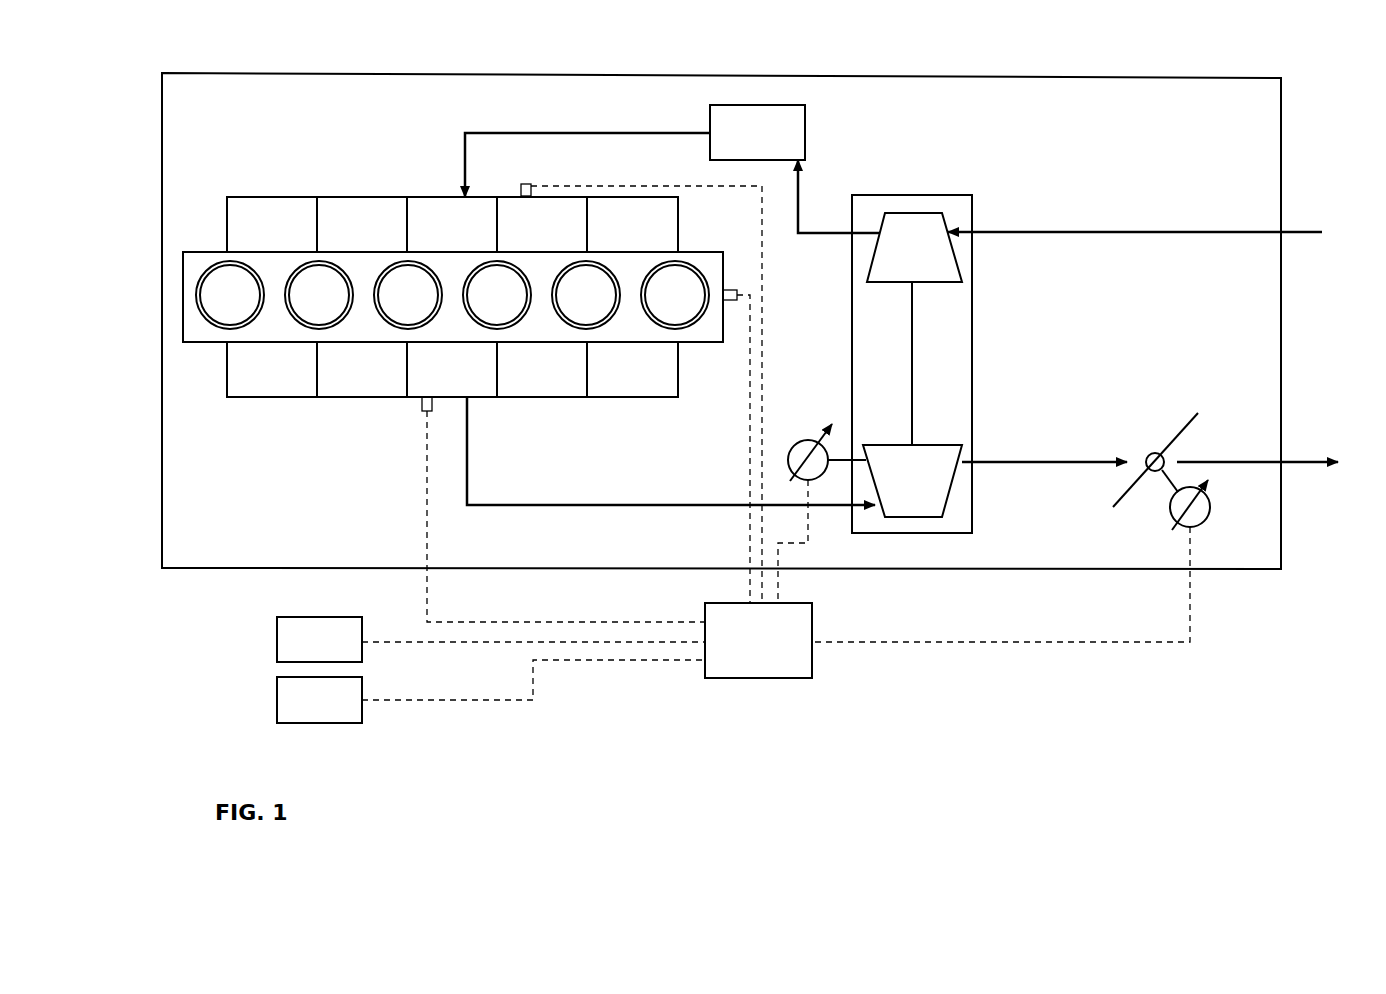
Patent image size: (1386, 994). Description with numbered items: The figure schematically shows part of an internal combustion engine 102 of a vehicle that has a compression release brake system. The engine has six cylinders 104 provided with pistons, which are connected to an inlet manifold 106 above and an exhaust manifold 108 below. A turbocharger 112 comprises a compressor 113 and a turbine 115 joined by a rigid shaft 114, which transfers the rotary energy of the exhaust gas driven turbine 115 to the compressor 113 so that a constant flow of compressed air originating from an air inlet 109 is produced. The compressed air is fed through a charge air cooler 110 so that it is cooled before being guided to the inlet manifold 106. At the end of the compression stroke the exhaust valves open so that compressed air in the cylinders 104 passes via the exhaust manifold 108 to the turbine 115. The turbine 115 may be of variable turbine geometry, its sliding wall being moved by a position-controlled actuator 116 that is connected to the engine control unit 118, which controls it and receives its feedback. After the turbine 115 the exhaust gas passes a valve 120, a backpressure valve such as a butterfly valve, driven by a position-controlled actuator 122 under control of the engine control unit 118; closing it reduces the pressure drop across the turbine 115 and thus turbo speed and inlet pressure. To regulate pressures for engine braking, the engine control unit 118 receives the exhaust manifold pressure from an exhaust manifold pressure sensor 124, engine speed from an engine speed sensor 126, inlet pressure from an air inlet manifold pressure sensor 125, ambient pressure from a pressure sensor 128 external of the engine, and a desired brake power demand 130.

The internal combustion engine 102 is at (721, 321).
The cylinders 104 is at (205, 293).
The inlet manifold 106 is at (308, 197).
The exhaust manifold 108 is at (300, 398).
The air inlet 109 is at (1135, 212).
The charge air cooler 110 is at (672, 169).
The turbocharger 112 is at (973, 363).
The compressor 113 is at (928, 227).
The rigid shaft 114 is at (912, 380).
The turbine 115 is at (935, 490).
The actuator 116 is at (822, 501).
The engine control unit 118 is at (758, 640).
The valve 120 is at (1225, 460).
The position-controlled actuator 122 is at (1036, 556).
The exhaust manifold pressure sensor 124 is at (543, 509).
The air inlet manifold pressure sensor 125 is at (641, 375).
The engine speed sensor 126 is at (671, 446).
The pressure sensor 128 is at (491, 639).
The desired brake power demand 130 is at (491, 691).